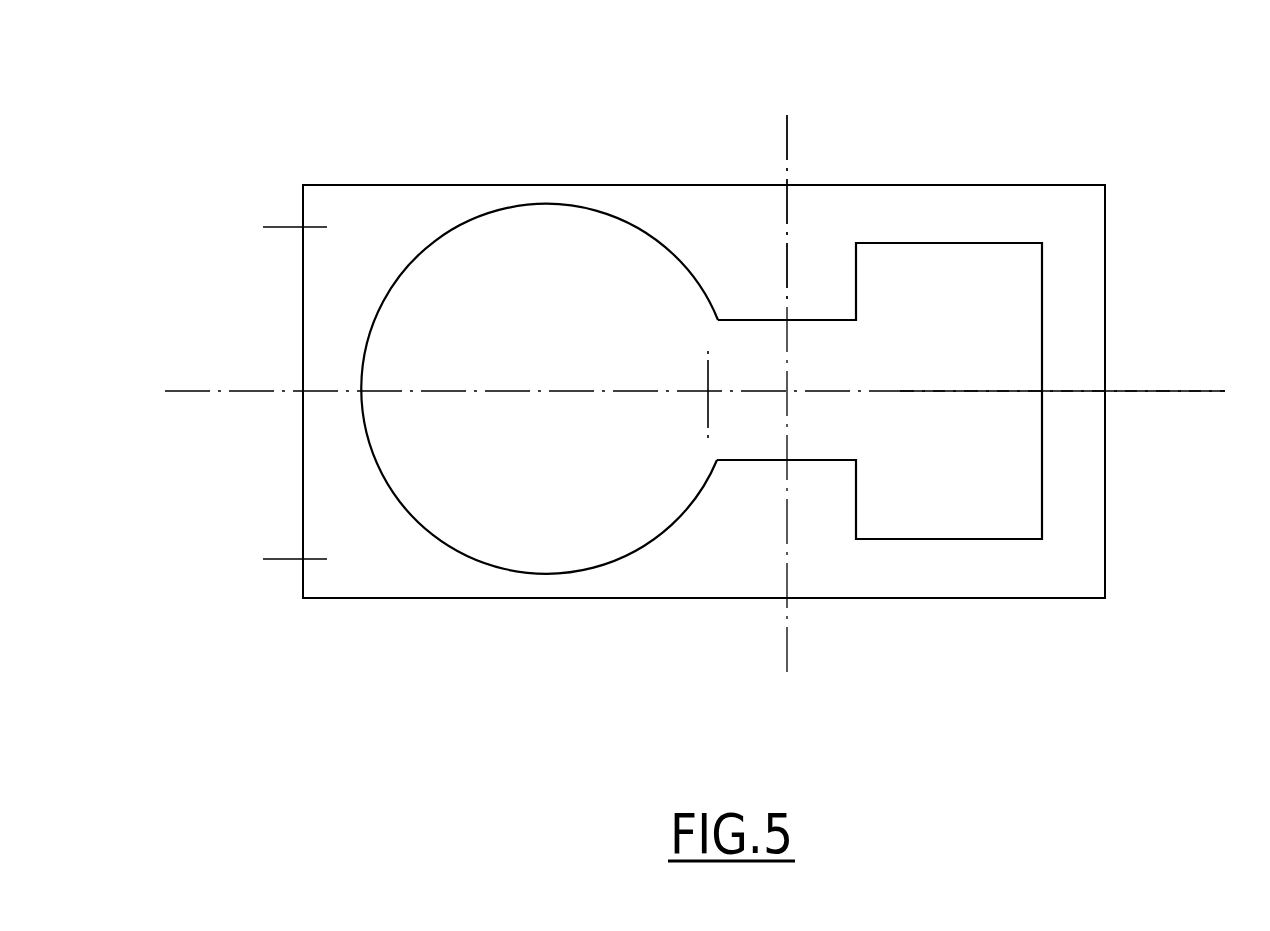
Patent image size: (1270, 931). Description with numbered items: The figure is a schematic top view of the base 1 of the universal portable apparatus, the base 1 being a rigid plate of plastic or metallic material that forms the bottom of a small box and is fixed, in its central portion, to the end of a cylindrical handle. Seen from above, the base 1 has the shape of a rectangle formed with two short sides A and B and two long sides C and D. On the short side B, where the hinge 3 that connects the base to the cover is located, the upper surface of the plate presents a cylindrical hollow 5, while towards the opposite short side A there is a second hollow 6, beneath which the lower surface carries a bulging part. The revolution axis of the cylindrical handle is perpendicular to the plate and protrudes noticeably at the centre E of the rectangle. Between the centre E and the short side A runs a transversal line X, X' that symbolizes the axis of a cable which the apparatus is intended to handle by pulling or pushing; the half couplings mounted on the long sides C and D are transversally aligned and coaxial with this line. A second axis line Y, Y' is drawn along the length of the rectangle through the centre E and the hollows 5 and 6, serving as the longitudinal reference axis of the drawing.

The base 1 is at (541, 152).
The hinge 3 is at (280, 228).
The cylindrical hollow 5 is at (492, 346).
The second hollow 6 is at (960, 341).
The short side A is at (1105, 357).
The short side B is at (303, 365).
The long side C is at (698, 185).
The long side D is at (718, 598).
The centre E is at (707, 390).
The transversal line end X is at (799, 407).
The transversal line end X' is at (801, 199).
The axis Y is at (682, 392).
The axis Y' is at (1078, 392).